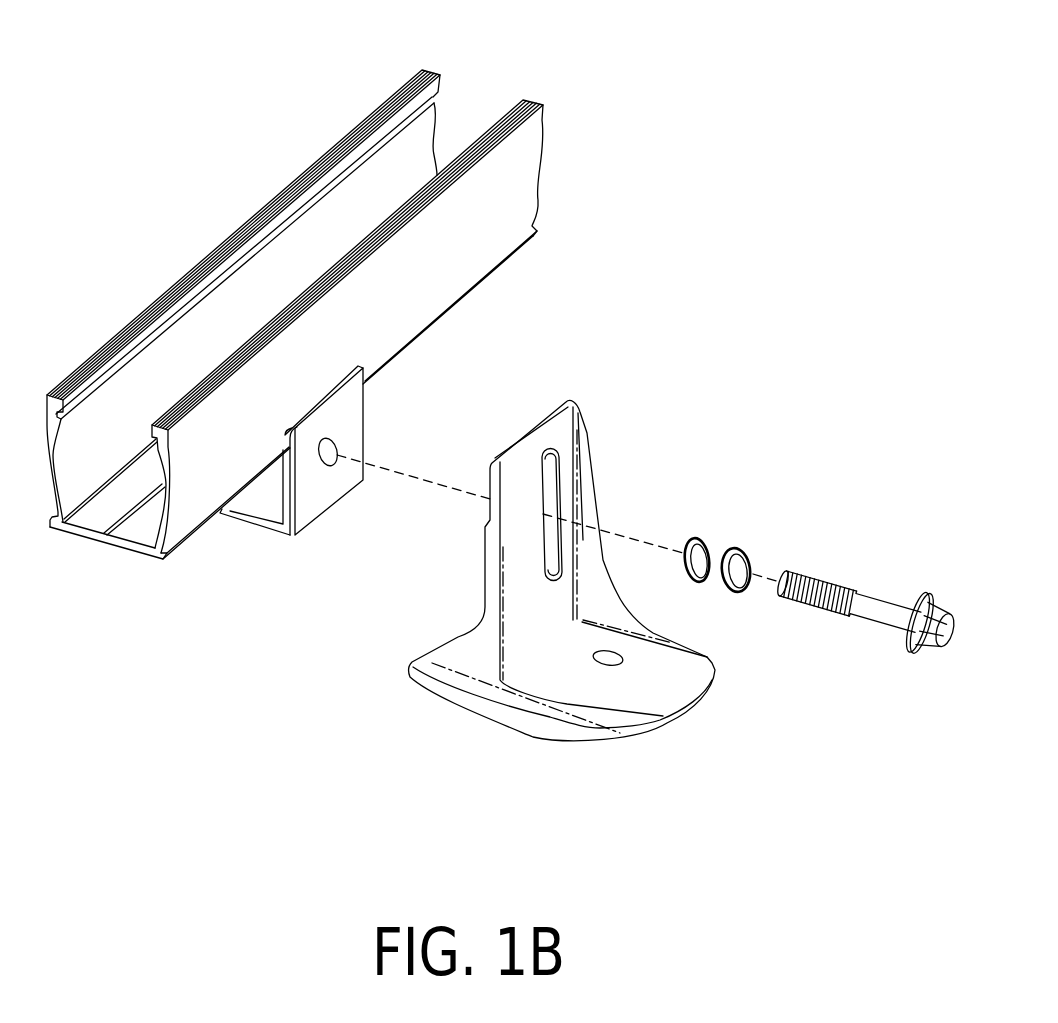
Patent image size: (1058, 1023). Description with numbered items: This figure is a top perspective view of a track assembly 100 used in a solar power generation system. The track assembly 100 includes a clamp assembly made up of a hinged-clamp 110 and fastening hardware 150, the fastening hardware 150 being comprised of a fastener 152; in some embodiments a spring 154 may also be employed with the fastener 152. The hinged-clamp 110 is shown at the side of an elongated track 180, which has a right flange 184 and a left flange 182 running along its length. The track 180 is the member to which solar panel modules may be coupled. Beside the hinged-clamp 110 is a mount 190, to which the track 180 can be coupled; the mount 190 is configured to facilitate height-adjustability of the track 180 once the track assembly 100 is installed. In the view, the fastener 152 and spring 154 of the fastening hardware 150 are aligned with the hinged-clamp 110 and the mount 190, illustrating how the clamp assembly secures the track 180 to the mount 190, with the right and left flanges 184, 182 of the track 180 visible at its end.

The track assembly 100 is at (766, 72).
The hinged-clamp 110 is at (266, 523).
The fastening hardware 150 is at (819, 532).
The fastener 152 is at (813, 574).
The spring 154 is at (701, 540).
The track 180 is at (336, 364).
The left flange 182 is at (53, 527).
The right flange 184 is at (166, 557).
The mount 190 is at (541, 412).